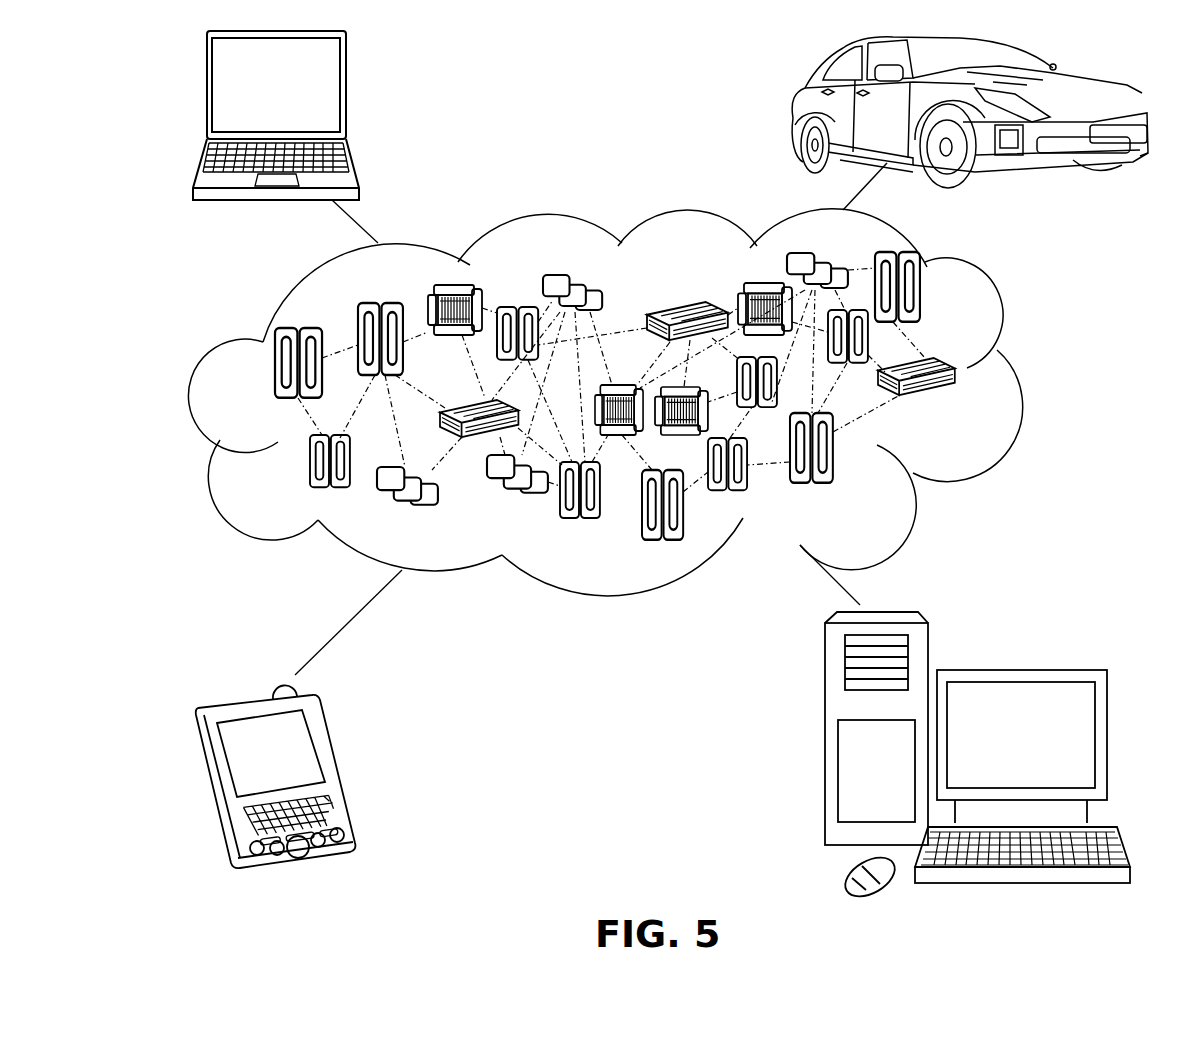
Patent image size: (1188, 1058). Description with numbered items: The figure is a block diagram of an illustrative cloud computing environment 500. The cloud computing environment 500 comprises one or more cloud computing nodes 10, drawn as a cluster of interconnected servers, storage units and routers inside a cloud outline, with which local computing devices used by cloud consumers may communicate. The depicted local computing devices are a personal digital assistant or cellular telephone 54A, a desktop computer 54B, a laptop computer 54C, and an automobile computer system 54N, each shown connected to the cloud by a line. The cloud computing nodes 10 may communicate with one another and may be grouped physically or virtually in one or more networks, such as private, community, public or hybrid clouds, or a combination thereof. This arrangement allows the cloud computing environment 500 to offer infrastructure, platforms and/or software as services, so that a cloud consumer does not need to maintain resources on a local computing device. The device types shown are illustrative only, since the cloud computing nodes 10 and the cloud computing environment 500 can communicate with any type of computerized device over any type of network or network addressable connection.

The cloud computing environment 500 is at (649, 402).
The cloud computing nodes 10 is at (958, 405).
The personal digital assistant or cellular telephone 54A is at (337, 767).
The desktop computer 54B is at (1018, 668).
The laptop computer 54C is at (346, 96).
The automobile computer system 54N is at (793, 110).